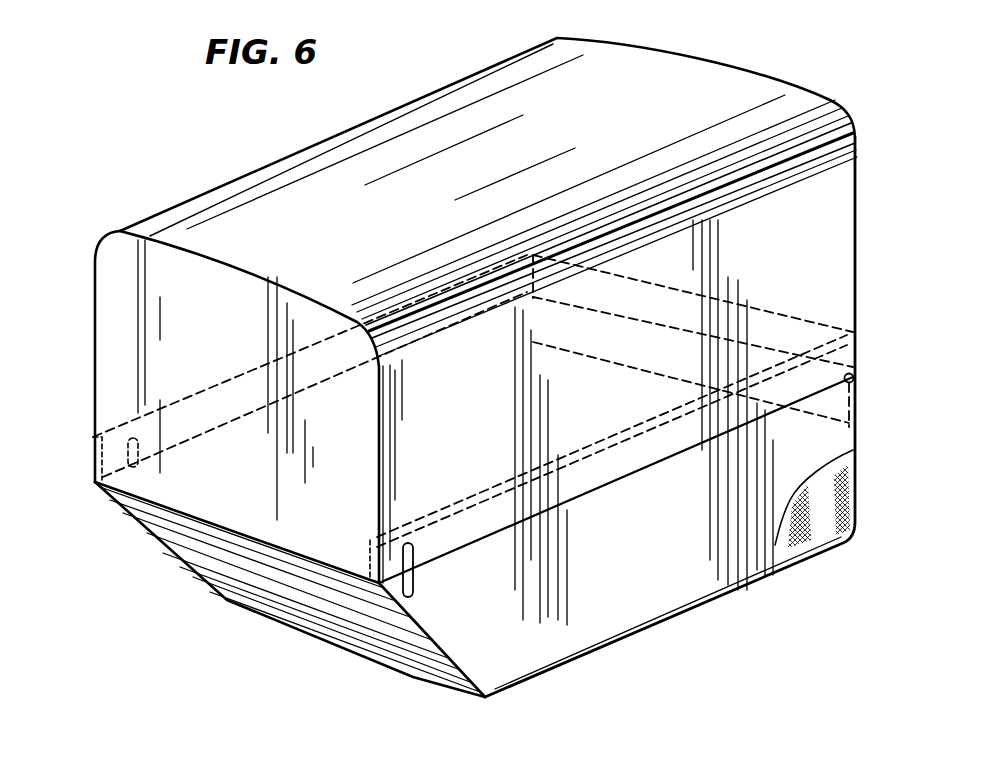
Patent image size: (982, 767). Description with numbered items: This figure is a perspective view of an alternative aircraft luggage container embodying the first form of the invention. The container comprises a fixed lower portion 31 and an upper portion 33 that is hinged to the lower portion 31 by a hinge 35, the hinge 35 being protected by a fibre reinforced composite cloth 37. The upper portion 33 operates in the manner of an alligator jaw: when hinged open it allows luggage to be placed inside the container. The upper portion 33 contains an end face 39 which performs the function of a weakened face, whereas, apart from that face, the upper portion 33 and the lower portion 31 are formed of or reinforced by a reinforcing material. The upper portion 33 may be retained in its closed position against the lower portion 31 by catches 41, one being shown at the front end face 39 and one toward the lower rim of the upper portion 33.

The fixed lower portion 31 is at (742, 548).
The upper portion 33 is at (697, 88).
The hinge 35 is at (855, 378).
The fibre reinforced composite cloth 37 is at (822, 532).
The end face 39 is at (117, 322).
The catches 41 is at (95, 459).